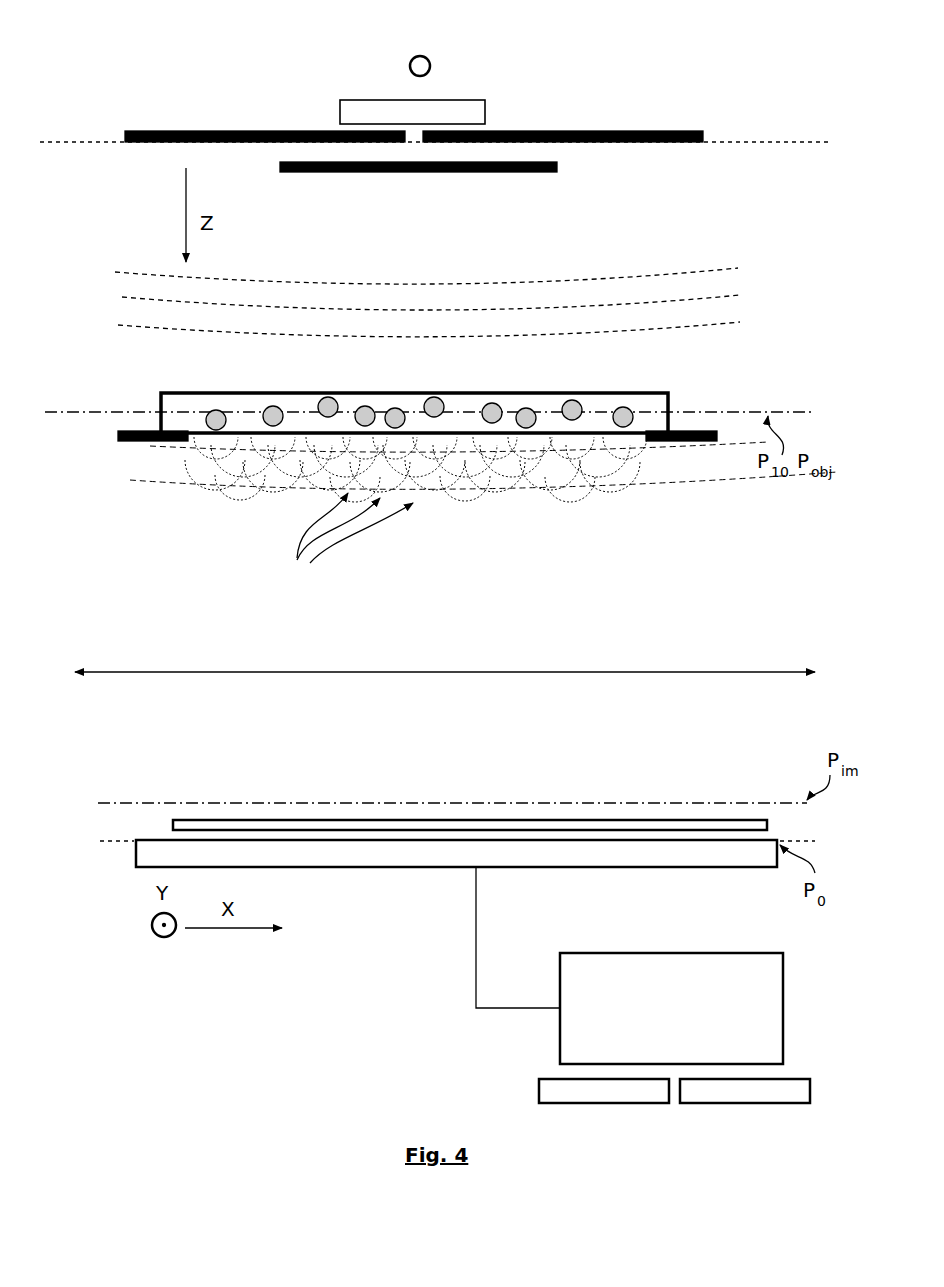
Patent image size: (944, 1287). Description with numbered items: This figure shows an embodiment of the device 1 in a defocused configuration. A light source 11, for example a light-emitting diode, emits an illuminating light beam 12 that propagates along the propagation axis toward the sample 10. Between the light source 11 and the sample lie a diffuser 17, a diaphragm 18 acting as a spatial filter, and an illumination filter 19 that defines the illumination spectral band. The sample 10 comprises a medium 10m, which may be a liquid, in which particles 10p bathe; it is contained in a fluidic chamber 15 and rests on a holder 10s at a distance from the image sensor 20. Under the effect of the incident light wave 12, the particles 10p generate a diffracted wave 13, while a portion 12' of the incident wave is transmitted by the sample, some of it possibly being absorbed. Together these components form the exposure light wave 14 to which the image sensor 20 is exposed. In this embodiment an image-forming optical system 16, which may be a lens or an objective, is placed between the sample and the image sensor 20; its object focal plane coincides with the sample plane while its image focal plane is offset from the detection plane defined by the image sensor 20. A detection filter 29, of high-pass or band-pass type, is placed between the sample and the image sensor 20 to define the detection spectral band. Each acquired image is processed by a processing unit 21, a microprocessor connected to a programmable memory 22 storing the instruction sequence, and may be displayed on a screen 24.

The device 1 is at (118, 82).
The light source 11 is at (406, 62).
The diffuser 17 is at (466, 116).
The diaphragm 18 is at (705, 140).
The illumination filter 19 is at (560, 170).
The light beam 12 is at (397, 300).
The sample 10 is at (160, 410).
The medium 10m is at (597, 412).
The particles 10p is at (316, 404).
The fluidic chamber 15 is at (670, 403).
The holder 10s is at (147, 445).
The transmitted portion of the incident light wave 12' is at (483, 513).
The diffracted wave 13 is at (349, 541).
The exposure light wave 14 is at (218, 582).
The image-forming optical system 16 is at (625, 678).
The detection filter 29 is at (770, 825).
The image sensor 20 is at (693, 853).
The screen 24 is at (762, 980).
The processing unit 21 is at (597, 1090).
The programmable memory 22 is at (722, 1090).